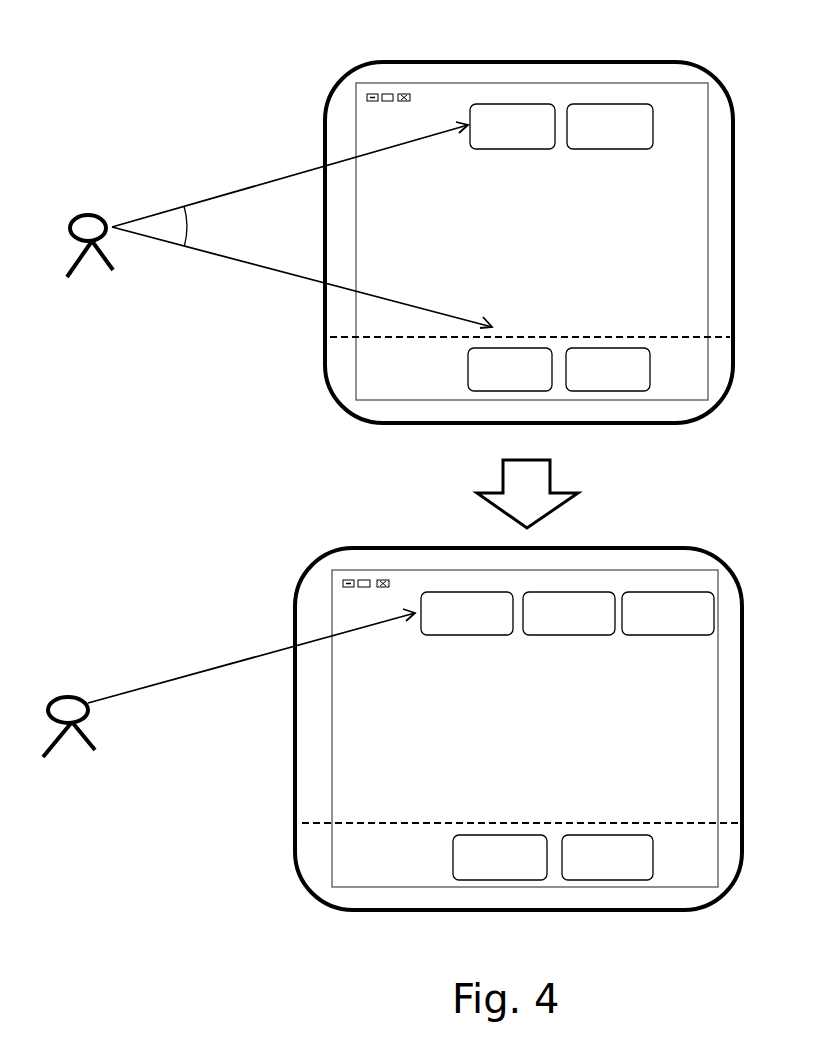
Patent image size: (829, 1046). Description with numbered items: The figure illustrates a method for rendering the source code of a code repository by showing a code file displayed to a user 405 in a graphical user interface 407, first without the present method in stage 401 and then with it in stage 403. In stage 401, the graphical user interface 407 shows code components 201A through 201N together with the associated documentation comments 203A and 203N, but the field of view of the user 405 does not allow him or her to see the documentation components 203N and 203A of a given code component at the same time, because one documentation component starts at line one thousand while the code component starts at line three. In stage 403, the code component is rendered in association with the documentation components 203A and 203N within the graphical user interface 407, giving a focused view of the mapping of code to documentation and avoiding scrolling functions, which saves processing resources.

The stage 401 is at (714, 47).
The stage 403 is at (663, 532).
The user 405 is at (73, 218).
The graphical user interface 407 is at (693, 250).
The code component 201A is at (488, 369).
The comments 203A is at (588, 369).
The code component 201N is at (502, 614).
The comments 203N is at (638, 614).